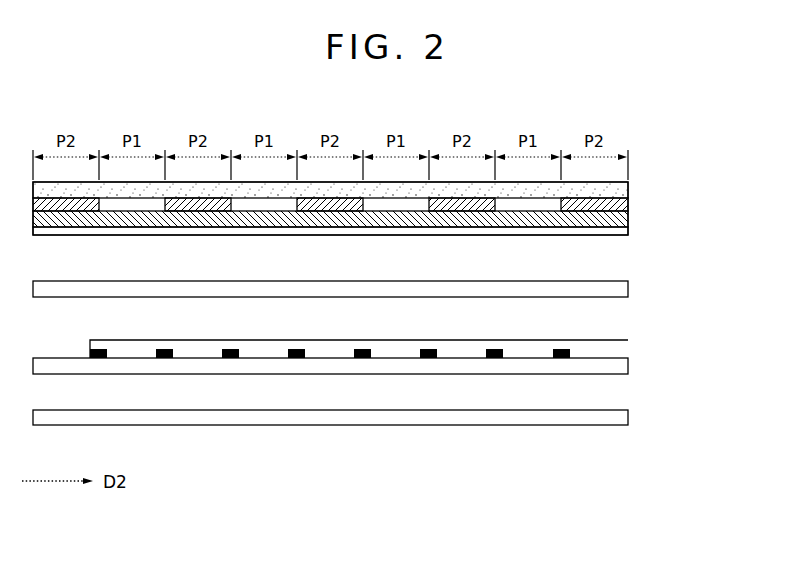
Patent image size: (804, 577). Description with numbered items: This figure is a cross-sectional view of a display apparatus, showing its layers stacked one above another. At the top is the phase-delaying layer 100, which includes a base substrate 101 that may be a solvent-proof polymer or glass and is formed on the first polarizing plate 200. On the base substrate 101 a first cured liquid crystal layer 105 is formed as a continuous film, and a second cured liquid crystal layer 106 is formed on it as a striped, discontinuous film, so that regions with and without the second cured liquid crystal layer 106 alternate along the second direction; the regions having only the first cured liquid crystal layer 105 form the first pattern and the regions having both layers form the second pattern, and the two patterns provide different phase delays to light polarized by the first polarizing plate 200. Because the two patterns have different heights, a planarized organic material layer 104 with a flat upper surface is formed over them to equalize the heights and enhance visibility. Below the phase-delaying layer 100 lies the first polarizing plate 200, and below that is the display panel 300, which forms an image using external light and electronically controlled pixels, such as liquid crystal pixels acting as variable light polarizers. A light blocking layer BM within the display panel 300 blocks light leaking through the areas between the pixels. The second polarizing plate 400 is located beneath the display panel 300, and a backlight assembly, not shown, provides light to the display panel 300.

The phase-delaying layer 100 is at (387, 209).
The base substrate 101 is at (363, 237).
The organic material layer 104 is at (628, 183).
The first cured liquid crystal layer 105 is at (628, 219).
The second cured liquid crystal layer 106 is at (628, 200).
The first polarizing plate 200 is at (628, 289).
The display panel 300 is at (386, 356).
The light blocking layer BM is at (570, 351).
The second polarizing plate 400 is at (628, 418).